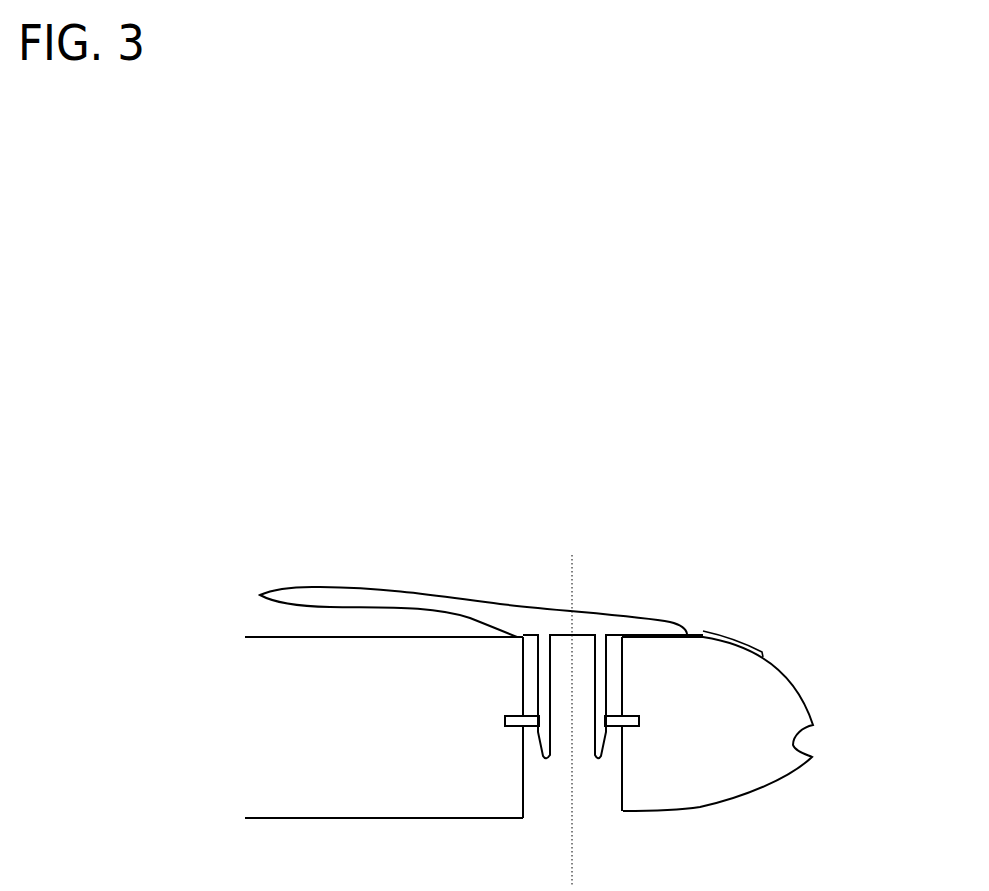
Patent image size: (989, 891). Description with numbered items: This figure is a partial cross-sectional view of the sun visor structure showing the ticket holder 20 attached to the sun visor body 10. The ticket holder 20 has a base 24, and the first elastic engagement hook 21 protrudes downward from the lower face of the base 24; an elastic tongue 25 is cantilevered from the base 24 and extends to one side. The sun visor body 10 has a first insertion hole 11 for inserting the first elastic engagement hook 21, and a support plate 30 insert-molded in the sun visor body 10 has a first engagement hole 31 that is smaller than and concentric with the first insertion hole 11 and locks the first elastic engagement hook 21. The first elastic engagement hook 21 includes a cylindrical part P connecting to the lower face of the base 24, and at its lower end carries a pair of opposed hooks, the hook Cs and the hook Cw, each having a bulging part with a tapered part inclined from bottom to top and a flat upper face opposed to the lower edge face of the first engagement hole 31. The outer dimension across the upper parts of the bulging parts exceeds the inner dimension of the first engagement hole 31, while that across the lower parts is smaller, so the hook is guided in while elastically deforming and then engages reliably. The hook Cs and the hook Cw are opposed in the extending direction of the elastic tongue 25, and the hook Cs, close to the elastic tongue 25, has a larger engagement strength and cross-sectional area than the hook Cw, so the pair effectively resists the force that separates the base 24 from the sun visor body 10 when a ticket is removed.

The sun visor body 10 is at (250, 636).
The first insertion hole 11 is at (528, 700).
The ticket holder 20 is at (480, 558).
The first elastic engagement hook 21 is at (544, 790).
The base 24 is at (602, 612).
The elastic tongue 25 is at (318, 596).
The support plate 30 is at (507, 723).
The first engagement hole 31 is at (598, 720).
The cylindrical part P is at (606, 670).
The hook Cs is at (535, 746).
The hook Cw is at (612, 747).